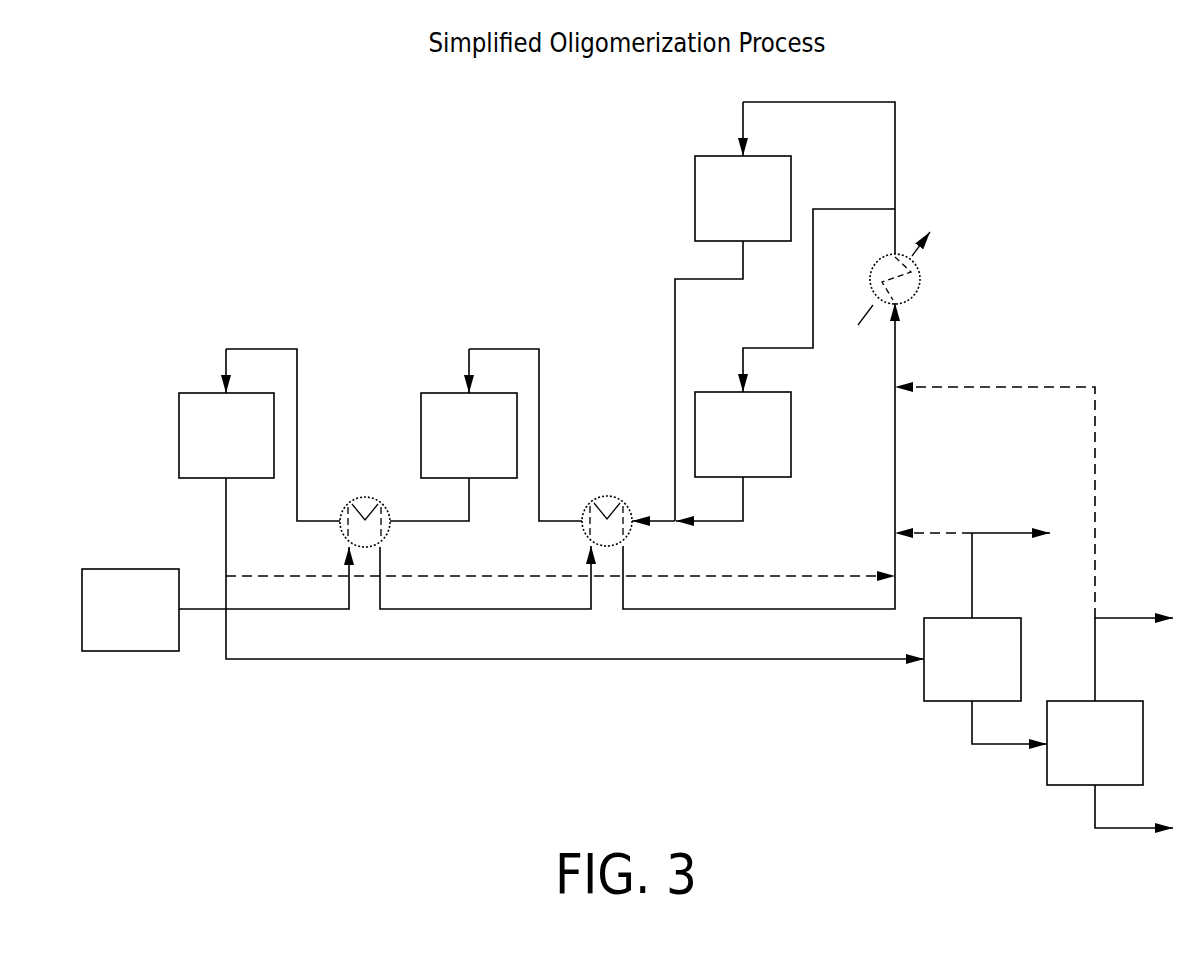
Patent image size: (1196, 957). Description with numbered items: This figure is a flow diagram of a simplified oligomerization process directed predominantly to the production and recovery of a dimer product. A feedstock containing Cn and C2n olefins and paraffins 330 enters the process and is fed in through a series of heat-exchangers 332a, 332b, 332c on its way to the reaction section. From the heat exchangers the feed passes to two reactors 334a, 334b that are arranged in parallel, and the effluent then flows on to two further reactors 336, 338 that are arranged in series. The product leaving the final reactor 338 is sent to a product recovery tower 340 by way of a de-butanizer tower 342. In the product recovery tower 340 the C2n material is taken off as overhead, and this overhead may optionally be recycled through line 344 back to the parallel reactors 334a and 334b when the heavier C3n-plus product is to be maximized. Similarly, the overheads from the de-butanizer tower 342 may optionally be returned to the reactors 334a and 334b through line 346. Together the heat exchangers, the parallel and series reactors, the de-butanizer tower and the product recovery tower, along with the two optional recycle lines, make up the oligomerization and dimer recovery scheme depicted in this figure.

The feedstock containing Cn and C2n olefins/paraffins 330 is at (110, 622).
The heat-exchanger 332a is at (363, 497).
The heat-exchanger 332b is at (605, 496).
The heat-exchanger 332c is at (921, 279).
The reactor 334a is at (717, 209).
The reactor 334b is at (717, 446).
The reactor 336 is at (449, 447).
The reactor 338 is at (206, 447).
The product recovery tower 340 is at (1075, 754).
The de-butanizer tower 342 is at (952, 671).
The recycle line 344 is at (1096, 462).
The recycle line 346 is at (938, 530).